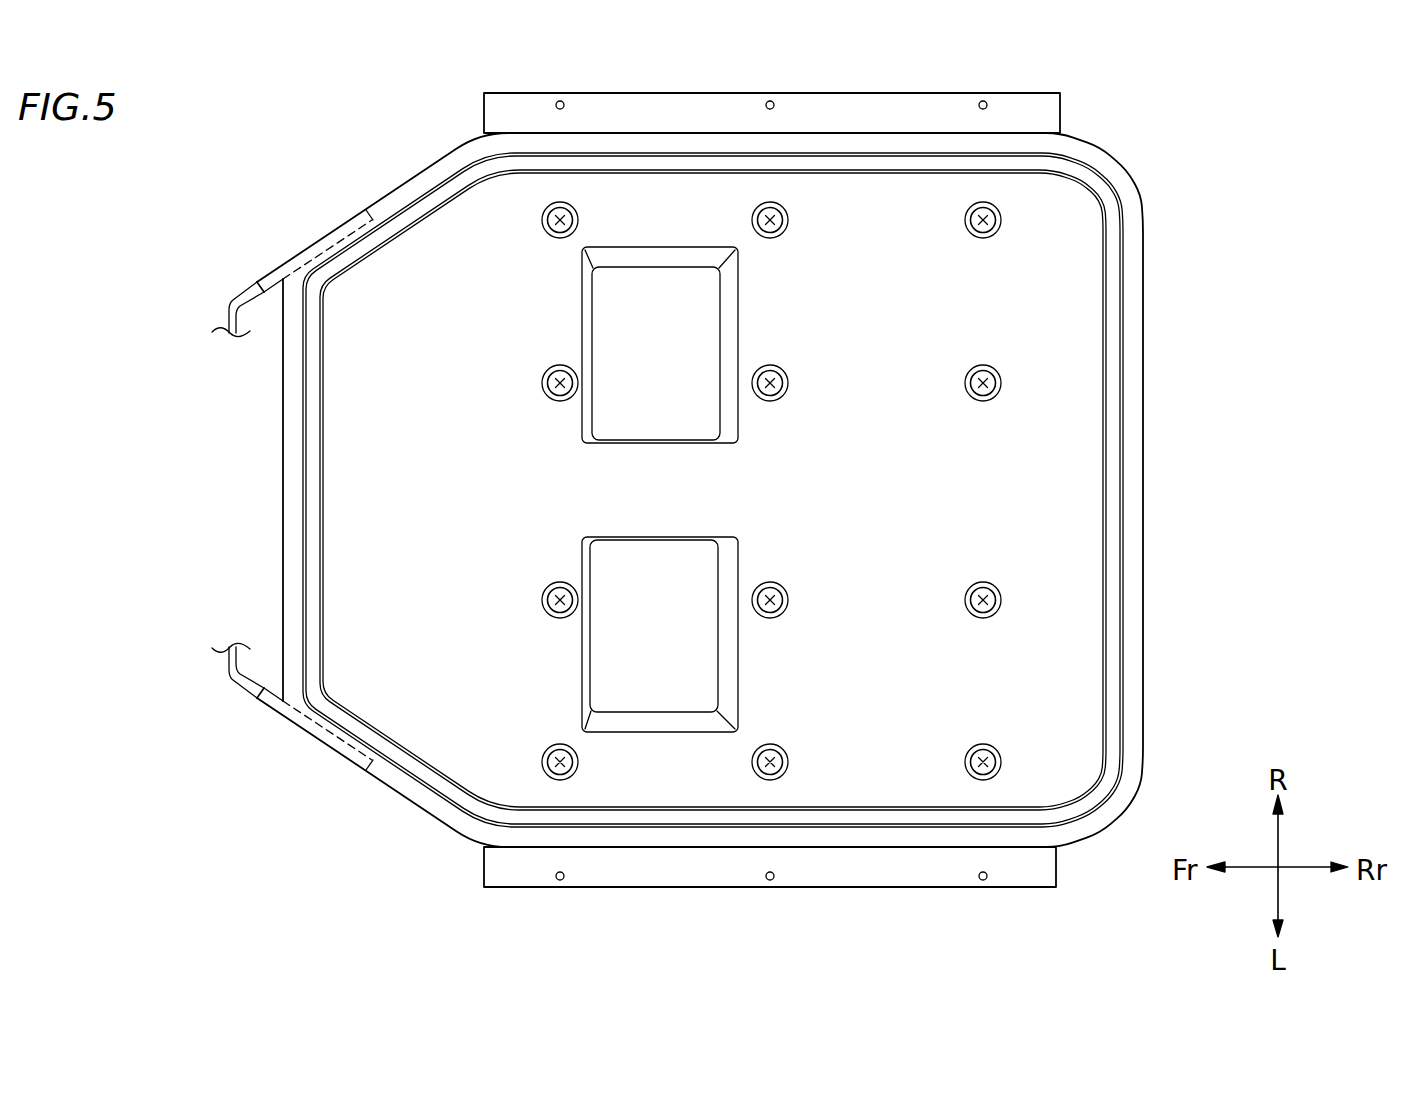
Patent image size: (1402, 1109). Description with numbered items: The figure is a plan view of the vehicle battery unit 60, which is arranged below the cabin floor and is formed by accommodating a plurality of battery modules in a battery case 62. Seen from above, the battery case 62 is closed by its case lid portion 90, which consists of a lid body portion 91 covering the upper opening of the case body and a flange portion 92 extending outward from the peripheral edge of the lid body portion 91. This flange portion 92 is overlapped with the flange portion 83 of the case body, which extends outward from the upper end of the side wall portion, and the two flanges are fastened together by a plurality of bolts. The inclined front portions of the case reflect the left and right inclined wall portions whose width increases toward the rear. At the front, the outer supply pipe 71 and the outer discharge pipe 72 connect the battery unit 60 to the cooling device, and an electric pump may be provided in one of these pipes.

The battery unit 60 is at (1182, 159).
The battery case 62 is at (1149, 477).
The outer supply pipe 71 is at (272, 708).
The outer discharge pipe 72 is at (272, 272).
The flange portion 83 is at (363, 832).
The case lid portion 90 is at (786, 490).
The lid body portion 91 is at (1055, 343).
The flange portion 92 is at (334, 491).